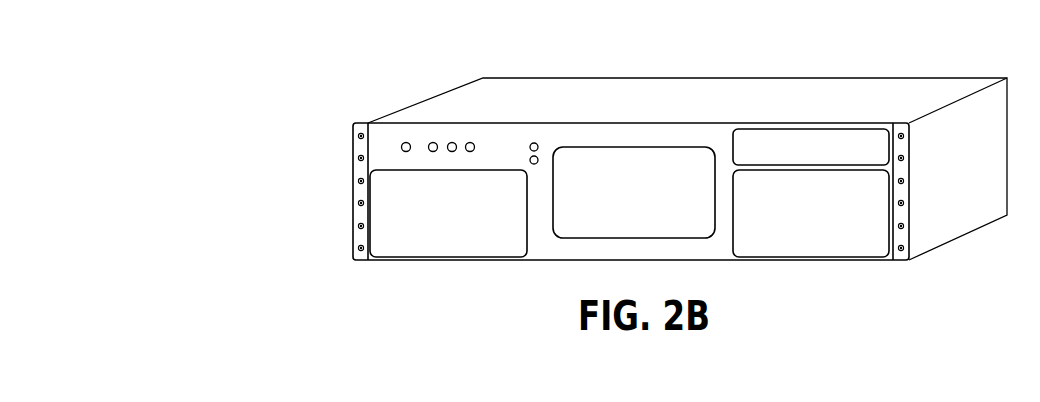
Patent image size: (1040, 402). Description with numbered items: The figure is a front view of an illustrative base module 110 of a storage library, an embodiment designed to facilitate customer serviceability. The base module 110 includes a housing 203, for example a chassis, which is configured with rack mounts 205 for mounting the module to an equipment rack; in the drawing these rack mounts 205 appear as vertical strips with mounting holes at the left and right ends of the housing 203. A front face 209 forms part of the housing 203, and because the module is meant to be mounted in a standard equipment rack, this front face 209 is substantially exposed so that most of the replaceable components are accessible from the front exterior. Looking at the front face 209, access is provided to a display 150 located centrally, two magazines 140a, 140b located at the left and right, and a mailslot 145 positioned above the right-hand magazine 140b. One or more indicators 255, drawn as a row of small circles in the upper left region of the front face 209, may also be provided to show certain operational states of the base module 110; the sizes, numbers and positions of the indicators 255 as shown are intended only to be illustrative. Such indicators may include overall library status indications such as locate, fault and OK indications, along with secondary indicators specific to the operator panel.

The base module 110 is at (642, 130).
The housing 203 is at (448, 90).
The rack mounts 205 is at (352, 168).
The front face 209 is at (689, 141).
The indicators 255 is at (470, 142).
The magazine 140a is at (468, 234).
The magazine 140b is at (811, 213).
The mailslot 145 is at (865, 158).
The display 150 is at (647, 214).